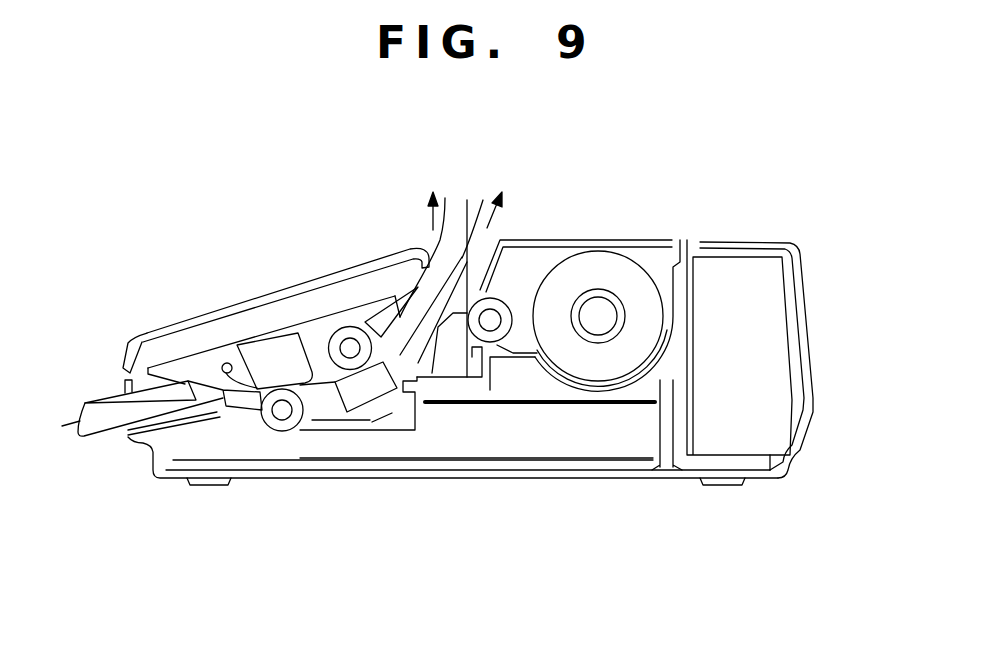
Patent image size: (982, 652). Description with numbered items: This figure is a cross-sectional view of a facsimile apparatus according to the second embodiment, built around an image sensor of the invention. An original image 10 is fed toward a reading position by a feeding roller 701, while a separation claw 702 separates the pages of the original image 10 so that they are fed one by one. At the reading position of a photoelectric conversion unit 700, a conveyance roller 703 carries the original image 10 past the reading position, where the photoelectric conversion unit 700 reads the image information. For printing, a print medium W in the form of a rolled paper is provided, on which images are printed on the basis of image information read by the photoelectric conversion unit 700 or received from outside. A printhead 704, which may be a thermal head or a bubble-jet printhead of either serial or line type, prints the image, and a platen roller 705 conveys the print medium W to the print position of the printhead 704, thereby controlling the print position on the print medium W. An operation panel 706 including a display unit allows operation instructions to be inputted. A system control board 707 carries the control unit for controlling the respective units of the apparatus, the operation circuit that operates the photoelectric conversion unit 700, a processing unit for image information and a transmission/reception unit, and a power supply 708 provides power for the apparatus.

The original image 10 is at (432, 250).
The photoelectric conversion unit 700 is at (360, 395).
The feeding roller 701 is at (279, 432).
The separation claw 702 is at (258, 390).
The conveyance roller 703 is at (350, 330).
The printhead 704 is at (455, 365).
The platen roller 705 is at (497, 306).
The operation panel 706 is at (240, 308).
The system control board 707 is at (572, 458).
The power supply 708 is at (713, 275).
The print medium w is at (596, 268).